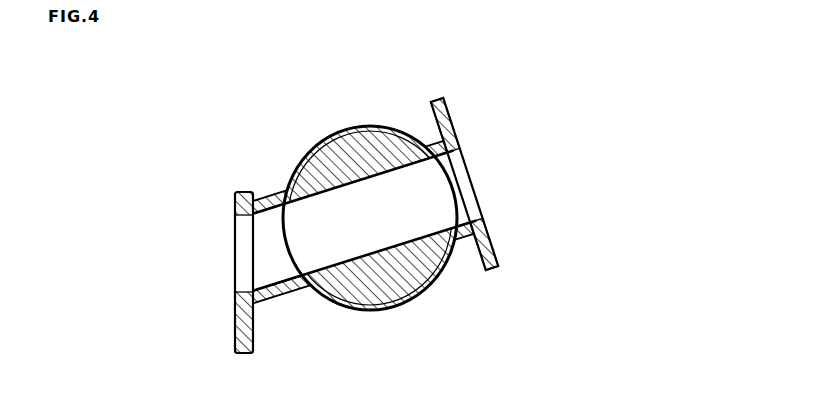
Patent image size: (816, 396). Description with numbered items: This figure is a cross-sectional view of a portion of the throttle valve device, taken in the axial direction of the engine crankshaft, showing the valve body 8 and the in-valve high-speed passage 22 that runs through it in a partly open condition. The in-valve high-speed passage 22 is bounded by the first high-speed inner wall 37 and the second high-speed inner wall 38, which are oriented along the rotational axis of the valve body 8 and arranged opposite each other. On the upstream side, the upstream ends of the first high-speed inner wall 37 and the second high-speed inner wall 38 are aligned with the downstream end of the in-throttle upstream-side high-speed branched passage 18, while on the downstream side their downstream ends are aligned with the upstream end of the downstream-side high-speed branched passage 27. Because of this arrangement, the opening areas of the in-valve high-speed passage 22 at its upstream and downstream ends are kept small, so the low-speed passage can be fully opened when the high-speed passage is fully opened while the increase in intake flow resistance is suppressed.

The valve body 8 is at (450, 267).
The in-throttle upstream-side high-speed branched passage 18 is at (482, 200).
The in-valve high-speed passage 22 is at (330, 214).
The downstream-side high-speed branched passage 27 is at (250, 227).
The first high-speed inner wall 37 is at (368, 260).
The second high-speed inner wall 38 is at (403, 173).